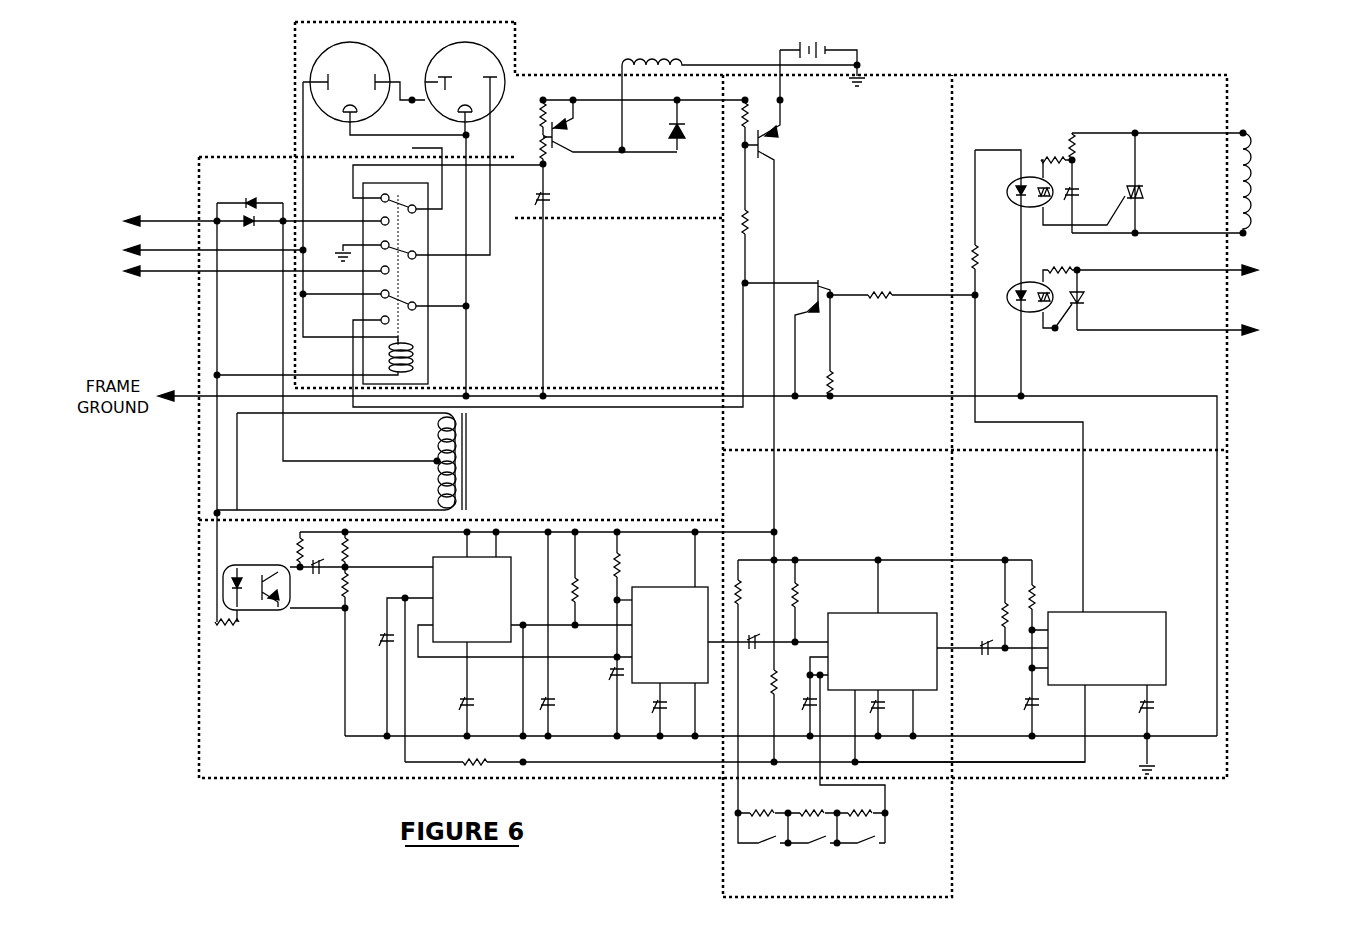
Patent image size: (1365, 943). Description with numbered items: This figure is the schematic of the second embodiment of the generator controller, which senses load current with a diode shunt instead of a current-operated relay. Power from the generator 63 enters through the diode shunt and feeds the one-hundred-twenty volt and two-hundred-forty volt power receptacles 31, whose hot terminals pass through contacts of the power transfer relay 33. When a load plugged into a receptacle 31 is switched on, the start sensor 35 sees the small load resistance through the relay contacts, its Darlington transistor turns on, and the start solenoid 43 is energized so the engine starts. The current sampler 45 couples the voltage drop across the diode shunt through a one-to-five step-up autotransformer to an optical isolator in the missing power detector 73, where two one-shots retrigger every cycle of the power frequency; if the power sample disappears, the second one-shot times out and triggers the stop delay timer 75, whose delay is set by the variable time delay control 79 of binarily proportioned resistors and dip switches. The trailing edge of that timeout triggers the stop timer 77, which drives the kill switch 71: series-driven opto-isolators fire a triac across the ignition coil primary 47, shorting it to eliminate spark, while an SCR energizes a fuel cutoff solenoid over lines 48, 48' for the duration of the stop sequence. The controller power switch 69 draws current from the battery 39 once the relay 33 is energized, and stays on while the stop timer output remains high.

The power receptacle 31 is at (312, 53).
The relay 33 is at (430, 332).
The start sensor 35 is at (643, 205).
The battery 39 is at (790, 52).
The start solenoid 43 is at (622, 61).
The current sampler 45 is at (263, 461).
The coil primary 47 is at (1240, 164).
The line 48 is at (1212, 300).
The line 48' is at (1174, 346).
The power from generator 63 is at (146, 276).
The controller power switch 69 is at (910, 95).
The kill switch 71 is at (1105, 87).
The missing power detector 73 is at (590, 545).
The stop delay timer 75 is at (885, 483).
The stop timer 77 is at (1157, 497).
The variable time delay control 79 is at (900, 812).